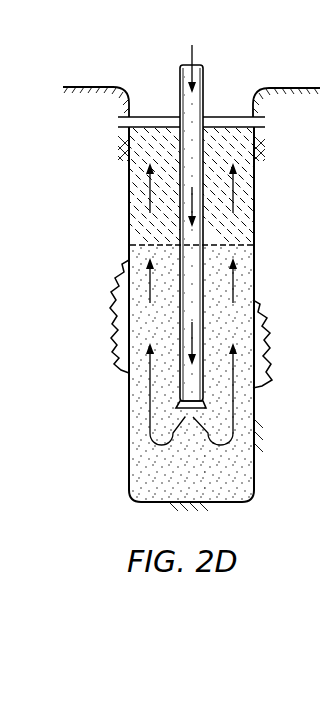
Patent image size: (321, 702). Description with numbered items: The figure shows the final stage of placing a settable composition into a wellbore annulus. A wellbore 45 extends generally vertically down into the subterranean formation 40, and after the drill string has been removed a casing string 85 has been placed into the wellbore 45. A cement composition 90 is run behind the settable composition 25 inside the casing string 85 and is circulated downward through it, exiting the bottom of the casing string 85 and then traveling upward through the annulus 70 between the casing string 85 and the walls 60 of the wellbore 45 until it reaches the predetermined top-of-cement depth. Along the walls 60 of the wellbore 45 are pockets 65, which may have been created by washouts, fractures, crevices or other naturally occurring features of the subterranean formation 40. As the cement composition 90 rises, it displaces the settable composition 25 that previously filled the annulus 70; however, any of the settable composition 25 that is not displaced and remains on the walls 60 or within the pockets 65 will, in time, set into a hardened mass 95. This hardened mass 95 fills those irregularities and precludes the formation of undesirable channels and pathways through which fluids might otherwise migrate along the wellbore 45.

The wellbore 45 is at (96, 140).
The subterranean formation 40 is at (97, 188).
The settable composition 25 is at (233, 189).
The annulus 70 is at (254, 210).
The walls 60 is at (128, 266).
The cement composition 90 is at (233, 283).
The hardened mass 95 is at (117, 331).
The pockets 65 is at (118, 350).
The casing string 85 is at (180, 379).